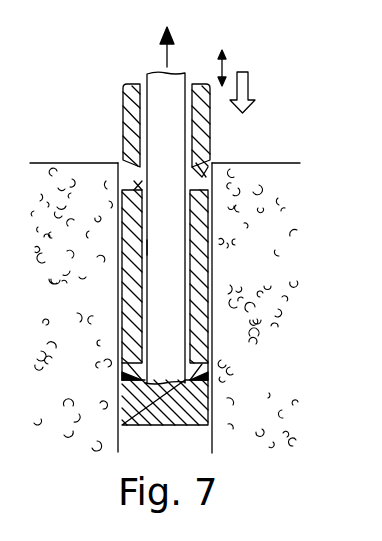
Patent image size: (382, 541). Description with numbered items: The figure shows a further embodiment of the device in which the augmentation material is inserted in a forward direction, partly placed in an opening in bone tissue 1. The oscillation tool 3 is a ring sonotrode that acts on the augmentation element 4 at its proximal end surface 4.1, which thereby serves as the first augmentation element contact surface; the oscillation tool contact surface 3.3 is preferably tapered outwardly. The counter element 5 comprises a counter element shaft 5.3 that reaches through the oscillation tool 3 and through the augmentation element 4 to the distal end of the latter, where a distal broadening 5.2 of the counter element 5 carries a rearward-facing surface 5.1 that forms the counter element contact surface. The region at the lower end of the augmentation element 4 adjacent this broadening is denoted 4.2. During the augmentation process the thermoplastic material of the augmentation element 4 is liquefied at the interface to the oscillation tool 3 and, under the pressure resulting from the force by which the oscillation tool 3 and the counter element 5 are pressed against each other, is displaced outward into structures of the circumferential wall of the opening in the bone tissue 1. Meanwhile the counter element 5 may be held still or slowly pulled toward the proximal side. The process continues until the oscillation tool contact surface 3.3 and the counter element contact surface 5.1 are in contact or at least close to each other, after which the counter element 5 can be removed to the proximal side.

The bone tissue 1 is at (265, 217).
The oscillation tool 3 is at (92, 93).
The oscillation tool contact surface 3.3 is at (203, 172).
The augmentation element 4 is at (197, 250).
The proximal end surface 4.1 is at (138, 180).
The liner lower end seal 4.2 is at (140, 372).
The counter element 5 is at (130, 52).
The counter element contact surface 5.1 is at (193, 370).
The distal broadening 5.2 is at (187, 401).
The counter element shaft 5.3 is at (165, 247).